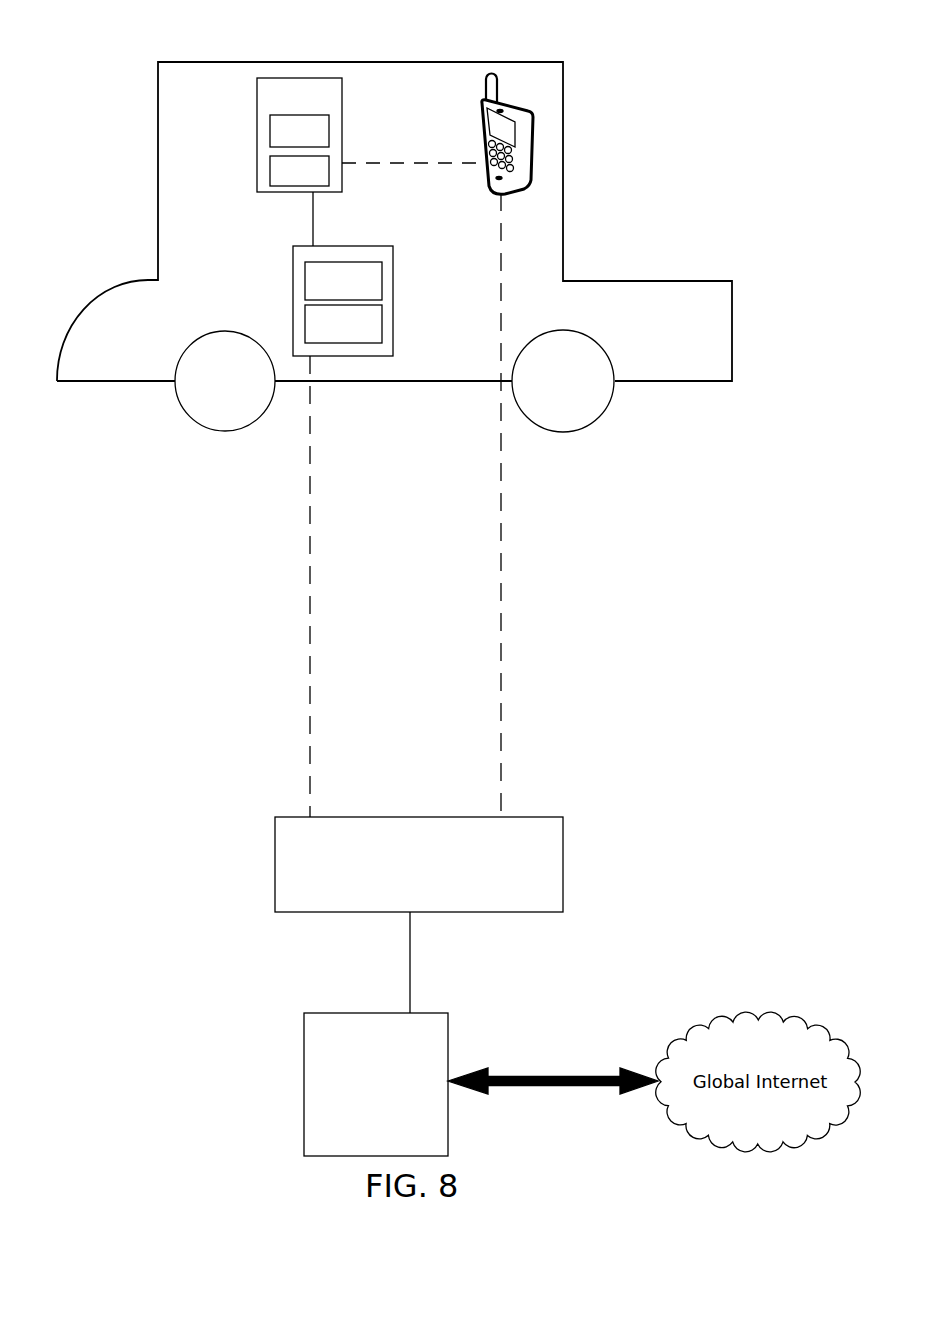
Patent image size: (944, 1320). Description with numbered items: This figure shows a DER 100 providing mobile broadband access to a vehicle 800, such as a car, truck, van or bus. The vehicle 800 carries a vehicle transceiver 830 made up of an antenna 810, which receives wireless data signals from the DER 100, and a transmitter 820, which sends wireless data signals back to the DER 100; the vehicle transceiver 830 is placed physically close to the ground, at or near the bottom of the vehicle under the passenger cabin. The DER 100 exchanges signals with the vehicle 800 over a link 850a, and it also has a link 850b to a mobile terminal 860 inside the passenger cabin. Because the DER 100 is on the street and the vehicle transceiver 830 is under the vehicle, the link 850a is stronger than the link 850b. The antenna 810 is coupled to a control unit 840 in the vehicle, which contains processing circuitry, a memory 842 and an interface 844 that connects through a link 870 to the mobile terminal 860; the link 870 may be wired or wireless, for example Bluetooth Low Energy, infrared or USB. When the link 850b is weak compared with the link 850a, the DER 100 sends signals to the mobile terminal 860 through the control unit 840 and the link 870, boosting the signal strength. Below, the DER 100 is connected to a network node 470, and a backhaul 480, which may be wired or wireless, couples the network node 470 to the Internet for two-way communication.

The vehicle 800 is at (158, 114).
The control unit 840 is at (317, 106).
The memory 842 is at (317, 141).
The interface 844 is at (317, 181).
The vehicle transceiver 830 is at (293, 278).
The antenna 810 is at (361, 291).
The transmitter 820 is at (361, 334).
The link 870 is at (388, 167).
The mobile terminal 860 is at (533, 115).
The link 850a is at (310, 595).
The link 850b is at (501, 608).
The DER 100 is at (275, 870).
The network node 470 is at (304, 1080).
The backhaul 480 is at (531, 1076).